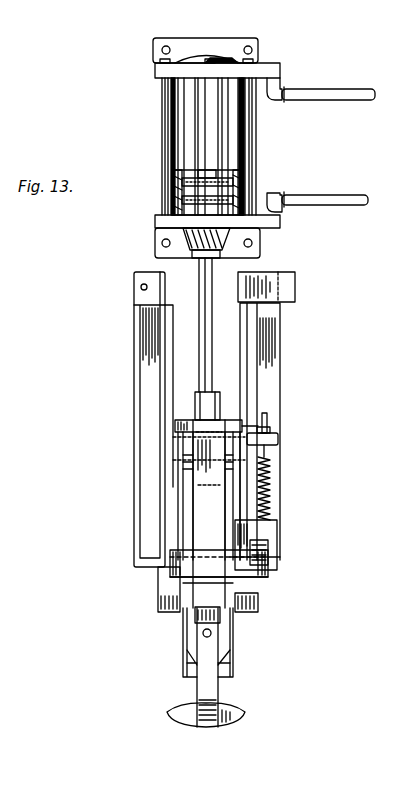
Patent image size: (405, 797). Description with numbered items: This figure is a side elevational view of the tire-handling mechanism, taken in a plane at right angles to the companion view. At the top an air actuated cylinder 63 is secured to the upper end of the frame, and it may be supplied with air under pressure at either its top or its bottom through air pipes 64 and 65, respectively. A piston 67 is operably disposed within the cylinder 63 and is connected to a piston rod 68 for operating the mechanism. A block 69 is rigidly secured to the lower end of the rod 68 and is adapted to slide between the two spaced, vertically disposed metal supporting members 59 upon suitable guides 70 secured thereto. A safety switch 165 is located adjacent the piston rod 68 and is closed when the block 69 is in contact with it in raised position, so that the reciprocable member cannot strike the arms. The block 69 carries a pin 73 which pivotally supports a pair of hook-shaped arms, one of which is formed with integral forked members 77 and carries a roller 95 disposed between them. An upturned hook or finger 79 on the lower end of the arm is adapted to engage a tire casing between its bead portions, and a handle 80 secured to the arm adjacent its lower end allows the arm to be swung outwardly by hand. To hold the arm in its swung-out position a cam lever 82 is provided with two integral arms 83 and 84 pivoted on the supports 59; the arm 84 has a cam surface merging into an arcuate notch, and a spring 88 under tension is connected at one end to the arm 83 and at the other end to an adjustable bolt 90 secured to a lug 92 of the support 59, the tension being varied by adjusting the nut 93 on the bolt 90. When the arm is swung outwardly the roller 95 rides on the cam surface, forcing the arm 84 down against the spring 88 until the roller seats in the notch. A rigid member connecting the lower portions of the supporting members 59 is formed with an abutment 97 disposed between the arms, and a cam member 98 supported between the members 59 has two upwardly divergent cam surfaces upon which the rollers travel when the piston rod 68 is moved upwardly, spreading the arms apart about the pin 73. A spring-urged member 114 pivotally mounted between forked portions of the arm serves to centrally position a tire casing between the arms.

The air actuated cylinder 63 is at (225, 60).
The air pipe 64 is at (328, 84).
The air pipe 65 is at (314, 194).
The piston 67 is at (172, 183).
The piston rod 68 is at (203, 279).
The guides 70 is at (240, 325).
The safety switch 165 is at (296, 286).
The metal supporting members 59 is at (157, 338).
The block 69 is at (200, 418).
The cam member 98 is at (243, 432).
The adjustable bolt 90 is at (268, 416).
The nut 93 is at (270, 432).
The lug 92 is at (279, 443).
The spring 88 is at (270, 472).
The pin 73 is at (195, 465).
The forked members 77 is at (187, 535).
The cam lever 82 is at (278, 533).
The arm 84 is at (245, 560).
The arm 83 is at (279, 558).
The roller 95 is at (210, 577).
The abutment 97 is at (258, 603).
The member 114 is at (188, 672).
The handle 80 is at (197, 684).
The upturned hook or finger 79 is at (240, 706).